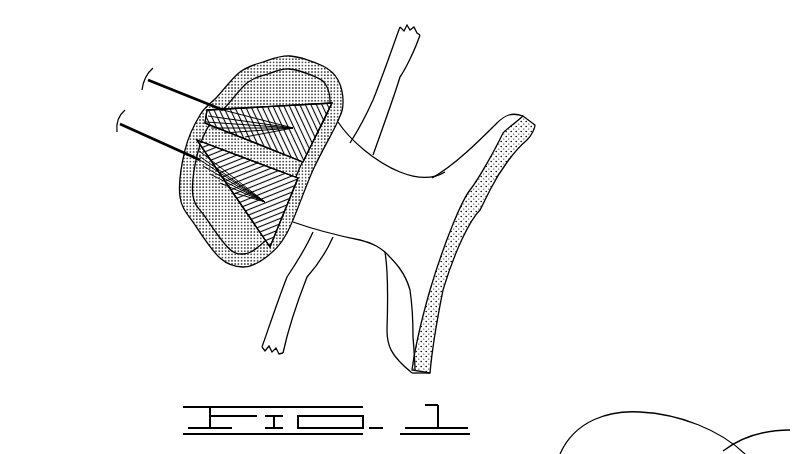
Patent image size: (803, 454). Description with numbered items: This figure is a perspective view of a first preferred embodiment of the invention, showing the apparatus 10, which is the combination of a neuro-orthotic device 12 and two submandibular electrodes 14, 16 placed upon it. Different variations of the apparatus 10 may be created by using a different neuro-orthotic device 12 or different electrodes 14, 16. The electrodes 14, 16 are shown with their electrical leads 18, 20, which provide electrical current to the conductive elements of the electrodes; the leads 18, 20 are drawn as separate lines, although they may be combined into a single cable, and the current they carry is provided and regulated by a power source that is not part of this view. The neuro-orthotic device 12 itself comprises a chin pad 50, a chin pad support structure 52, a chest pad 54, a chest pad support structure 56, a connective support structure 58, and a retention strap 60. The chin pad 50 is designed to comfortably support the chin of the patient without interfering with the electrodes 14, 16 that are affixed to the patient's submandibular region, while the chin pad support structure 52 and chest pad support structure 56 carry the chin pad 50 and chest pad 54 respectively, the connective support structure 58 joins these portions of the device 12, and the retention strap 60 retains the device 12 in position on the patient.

The apparatus 10 is at (585, 155).
The neuro-orthotic device 12 is at (383, 248).
The electrode 14 is at (210, 248).
The electrode 16 is at (280, 108).
The electrical lead 18 is at (140, 137).
The electrical lead 20 is at (172, 88).
The chin pad 50 is at (313, 56).
The chin pad support structure 52 is at (180, 197).
The chest pad 54 is at (438, 308).
The chest pad support structure 56 is at (500, 118).
The connective support structure 58 is at (397, 165).
The retention strap 60 is at (272, 324).